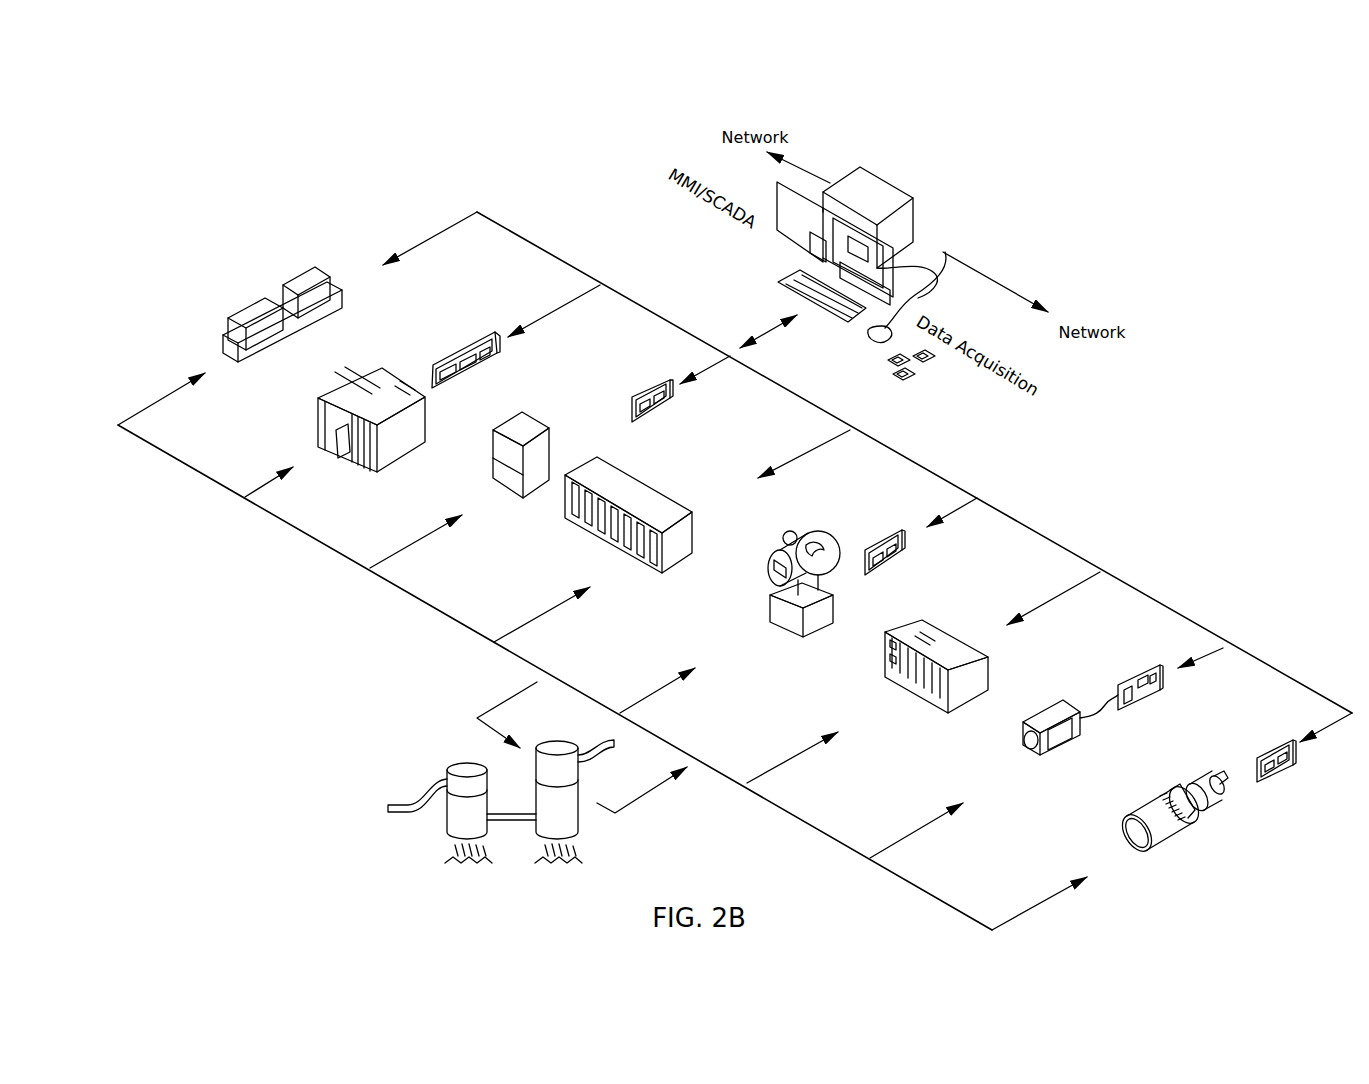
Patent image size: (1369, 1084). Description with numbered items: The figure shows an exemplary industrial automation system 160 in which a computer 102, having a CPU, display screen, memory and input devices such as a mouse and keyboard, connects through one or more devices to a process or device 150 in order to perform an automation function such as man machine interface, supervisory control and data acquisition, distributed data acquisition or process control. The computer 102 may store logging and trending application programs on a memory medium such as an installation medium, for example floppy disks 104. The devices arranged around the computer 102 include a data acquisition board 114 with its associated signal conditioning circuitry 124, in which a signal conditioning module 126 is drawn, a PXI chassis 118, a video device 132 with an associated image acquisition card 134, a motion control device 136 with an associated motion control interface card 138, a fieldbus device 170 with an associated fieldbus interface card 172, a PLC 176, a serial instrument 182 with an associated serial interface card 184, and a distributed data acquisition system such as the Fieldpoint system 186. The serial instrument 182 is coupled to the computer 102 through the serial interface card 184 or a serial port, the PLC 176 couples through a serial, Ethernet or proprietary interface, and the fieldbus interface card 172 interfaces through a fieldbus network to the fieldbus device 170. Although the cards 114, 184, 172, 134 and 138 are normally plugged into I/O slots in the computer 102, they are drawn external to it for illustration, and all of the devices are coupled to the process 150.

The computer 102 is at (870, 185).
The floppy disks 104 is at (912, 378).
The data acquisition (DAQ) board 114 is at (485, 335).
The PXI chassis 118 is at (912, 630).
The signal conditioning circuitry 124 is at (308, 437).
The signal conditioning module 126 is at (345, 445).
The video device 132 is at (1057, 740).
The image acquisition card 134 is at (1133, 673).
The motion control device 136 is at (1157, 838).
The motion control interface card 138 is at (1275, 778).
The process or device 150 is at (420, 797).
The industrial automation system 160 is at (1218, 255).
The fieldbus device 170 is at (812, 622).
The fieldbus interface card 172 is at (890, 530).
The PLC 176 is at (640, 498).
The serial instrument 182 is at (500, 475).
The serial interface card 184 is at (650, 392).
The Fieldpoint system 186 is at (310, 275).